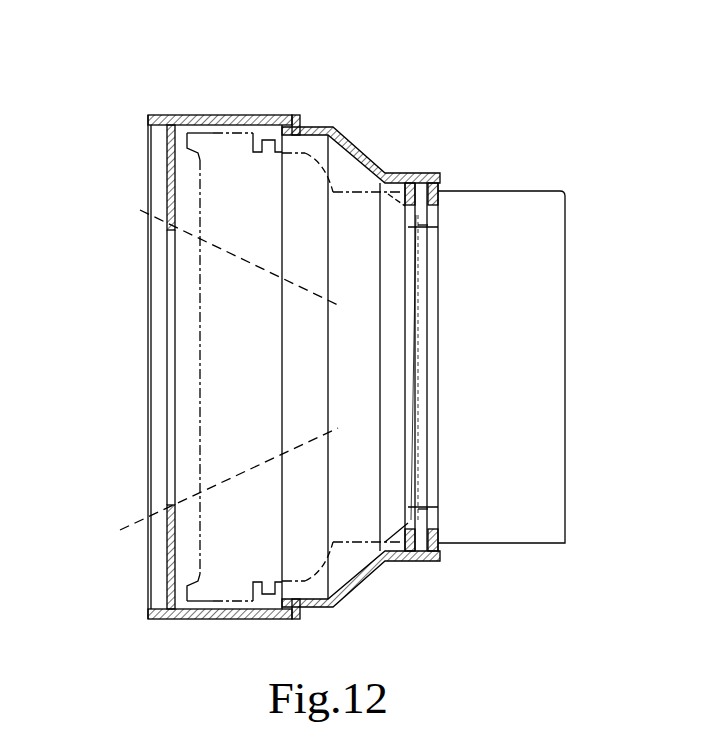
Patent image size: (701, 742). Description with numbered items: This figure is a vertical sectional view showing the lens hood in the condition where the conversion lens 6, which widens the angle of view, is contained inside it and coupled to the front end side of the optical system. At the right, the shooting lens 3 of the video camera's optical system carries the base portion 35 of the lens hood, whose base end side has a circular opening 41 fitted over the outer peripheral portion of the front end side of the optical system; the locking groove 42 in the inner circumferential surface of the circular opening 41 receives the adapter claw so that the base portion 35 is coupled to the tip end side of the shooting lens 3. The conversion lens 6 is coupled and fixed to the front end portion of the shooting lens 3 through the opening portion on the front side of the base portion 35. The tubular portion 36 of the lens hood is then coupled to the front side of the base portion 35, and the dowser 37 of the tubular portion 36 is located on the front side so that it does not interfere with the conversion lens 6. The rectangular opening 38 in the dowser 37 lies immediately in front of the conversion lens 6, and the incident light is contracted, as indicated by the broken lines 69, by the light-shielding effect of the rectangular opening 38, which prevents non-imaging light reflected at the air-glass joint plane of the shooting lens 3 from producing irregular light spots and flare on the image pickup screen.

The shooting lens 3 is at (530, 210).
The conversion lens 6 is at (305, 153).
The base portion 35 is at (362, 152).
The tubular portion 36 is at (202, 115).
The dowser 37 is at (165, 183).
The rectangular opening 38 is at (165, 240).
The circular opening 41 is at (440, 210).
The locking groove 42 is at (440, 183).
The broken lines 69 is at (138, 209).